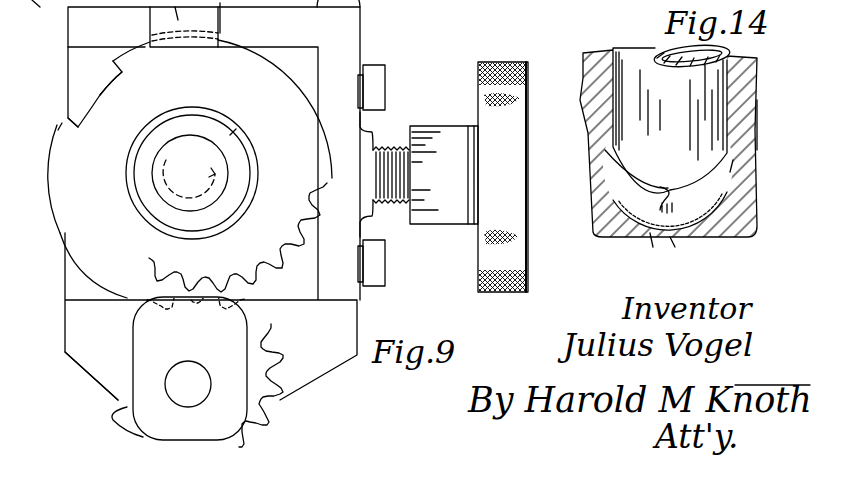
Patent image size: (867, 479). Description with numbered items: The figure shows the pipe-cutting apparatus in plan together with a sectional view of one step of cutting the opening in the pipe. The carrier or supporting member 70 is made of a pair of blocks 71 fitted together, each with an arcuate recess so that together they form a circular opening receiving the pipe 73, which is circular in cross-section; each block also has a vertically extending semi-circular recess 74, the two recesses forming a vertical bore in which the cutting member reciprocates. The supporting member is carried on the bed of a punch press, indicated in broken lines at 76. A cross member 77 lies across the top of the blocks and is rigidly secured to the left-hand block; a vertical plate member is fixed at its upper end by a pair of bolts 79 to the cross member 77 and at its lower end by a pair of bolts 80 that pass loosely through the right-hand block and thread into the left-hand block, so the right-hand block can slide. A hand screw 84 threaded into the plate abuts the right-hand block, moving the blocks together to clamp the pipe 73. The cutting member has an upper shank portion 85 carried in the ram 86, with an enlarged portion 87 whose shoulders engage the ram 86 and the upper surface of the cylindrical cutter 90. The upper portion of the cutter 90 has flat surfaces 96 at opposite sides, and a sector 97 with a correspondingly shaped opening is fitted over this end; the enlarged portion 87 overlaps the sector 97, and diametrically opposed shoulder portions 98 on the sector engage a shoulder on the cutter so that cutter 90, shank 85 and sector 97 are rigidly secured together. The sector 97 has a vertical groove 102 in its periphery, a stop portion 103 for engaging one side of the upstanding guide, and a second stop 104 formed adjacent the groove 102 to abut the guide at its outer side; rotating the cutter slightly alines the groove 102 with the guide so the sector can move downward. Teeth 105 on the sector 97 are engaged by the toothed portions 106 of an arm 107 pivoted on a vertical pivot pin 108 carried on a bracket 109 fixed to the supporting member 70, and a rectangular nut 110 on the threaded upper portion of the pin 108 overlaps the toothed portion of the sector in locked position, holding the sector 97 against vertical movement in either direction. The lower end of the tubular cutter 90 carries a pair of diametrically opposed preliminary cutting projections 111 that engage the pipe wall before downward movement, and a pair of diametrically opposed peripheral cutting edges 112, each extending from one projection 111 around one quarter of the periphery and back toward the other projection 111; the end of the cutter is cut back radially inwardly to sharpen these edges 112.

In FIG. 9, the carrier or supporting member 70 is at (62, 64).
In FIG. 14, the carrier or supporting member 70 is at (766, 122).
In FIG. 14, the blocks 71 is at (661, 240).
In FIG. 14, the pipe 73 is at (740, 155).
In FIG. 14, the semi-circular recess 74 is at (602, 93).
In FIG. 9, the bed of a punch press 76 is at (36, 5).
In FIG. 14, the cross member 77 is at (750, 70).
In FIG. 9, the bolts 79 is at (360, 93).
In FIG. 9, the bolts 80 is at (380, 72).
In FIG. 9, the hand screw 84 is at (442, 132).
In FIG. 9, the shank portion 85 is at (228, 162).
In FIG. 9, the ram 86 is at (178, 22).
In FIG. 9, the enlarged portion 87 is at (240, 130).
In FIG. 14, the cylindrical cutter 90 is at (638, 60).
In FIG. 9, the flat surfaces 96 is at (228, 117).
In FIG. 9, the sector 97 is at (72, 222).
In FIG. 9, the shoulder portions 98 is at (168, 108).
In FIG. 9, the vertical groove 102 is at (97, 97).
In FIG. 9, the stop portion 103 is at (222, 32).
In FIG. 9, the second stop 104 is at (62, 118).
In FIG. 9, the teeth 105 is at (297, 300).
In FIG. 9, the toothed portions 106 is at (268, 362).
In FIG. 9, the arm 107 is at (115, 414).
In FIG. 9, the vertical pivot pin 108 is at (195, 370).
In FIG. 9, the bracket 109 is at (83, 352).
In FIG. 9, the rectangular nut 110 is at (147, 353).
In FIG. 14, the preliminary cutting projections 111 is at (679, 204).
In FIG. 14, the peripheral cutting edges 112 is at (612, 200).